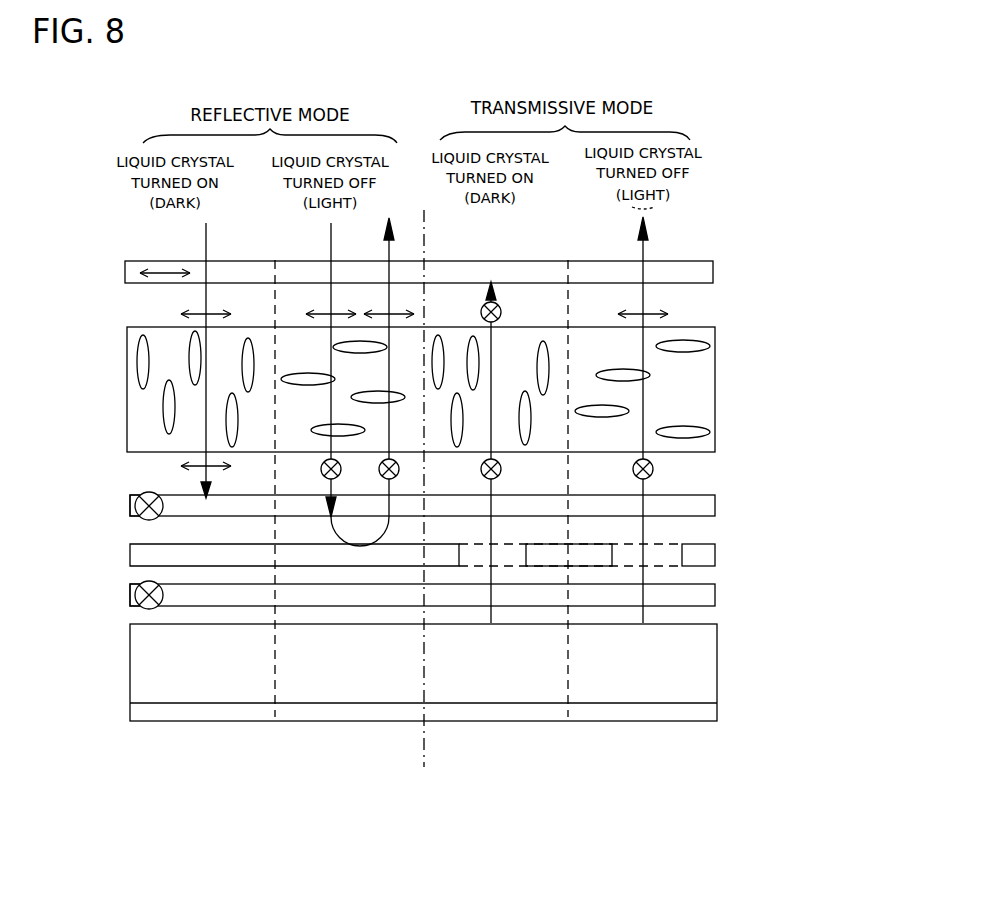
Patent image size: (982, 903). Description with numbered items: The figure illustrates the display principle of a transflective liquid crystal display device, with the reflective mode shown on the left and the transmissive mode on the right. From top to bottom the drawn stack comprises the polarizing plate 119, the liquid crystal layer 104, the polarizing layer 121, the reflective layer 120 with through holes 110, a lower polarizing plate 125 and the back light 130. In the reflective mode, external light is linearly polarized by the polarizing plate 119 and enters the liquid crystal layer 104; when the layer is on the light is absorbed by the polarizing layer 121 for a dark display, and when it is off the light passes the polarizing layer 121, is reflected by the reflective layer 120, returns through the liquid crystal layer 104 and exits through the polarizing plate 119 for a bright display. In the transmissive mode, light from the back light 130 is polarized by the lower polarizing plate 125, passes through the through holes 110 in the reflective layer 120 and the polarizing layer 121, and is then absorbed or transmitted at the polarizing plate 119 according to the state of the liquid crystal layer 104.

The polarizing plate 119 is at (713, 266).
The liquid crystal layer 104 is at (705, 380).
The polarizing layer 121 is at (713, 504).
The through holes 110 is at (660, 554).
The reflective layer 120 is at (715, 553).
The second polarizing plate 125 is at (715, 594).
The back light 130 is at (705, 660).